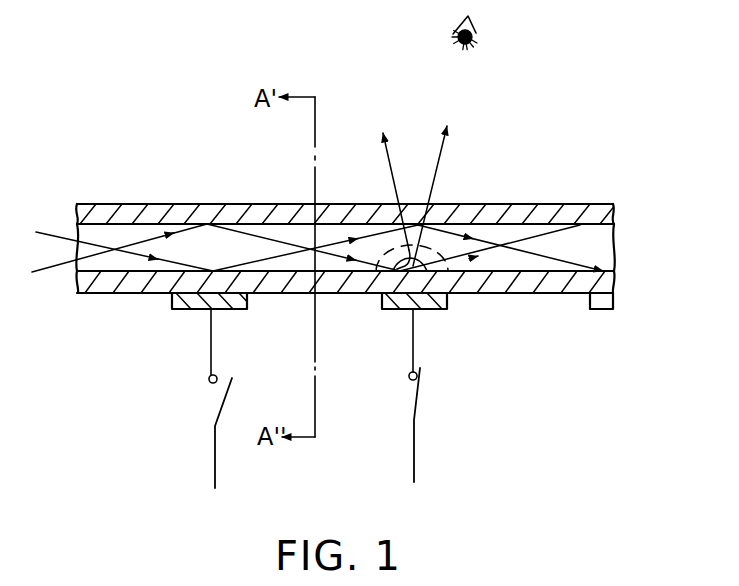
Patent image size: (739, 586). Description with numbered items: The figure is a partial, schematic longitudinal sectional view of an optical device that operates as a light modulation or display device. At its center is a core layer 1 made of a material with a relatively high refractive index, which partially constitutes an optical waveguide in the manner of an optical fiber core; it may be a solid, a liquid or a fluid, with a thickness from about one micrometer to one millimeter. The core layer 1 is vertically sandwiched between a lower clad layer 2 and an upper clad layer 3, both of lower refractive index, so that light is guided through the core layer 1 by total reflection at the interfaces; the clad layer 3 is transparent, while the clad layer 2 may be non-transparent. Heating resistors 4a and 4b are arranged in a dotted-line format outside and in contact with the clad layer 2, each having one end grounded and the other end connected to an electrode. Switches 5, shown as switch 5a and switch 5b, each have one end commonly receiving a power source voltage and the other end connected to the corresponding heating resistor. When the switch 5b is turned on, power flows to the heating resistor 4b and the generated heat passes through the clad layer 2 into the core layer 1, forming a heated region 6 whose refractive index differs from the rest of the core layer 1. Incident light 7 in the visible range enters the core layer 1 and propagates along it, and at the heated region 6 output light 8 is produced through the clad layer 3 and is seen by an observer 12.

The core layer 1 is at (600, 247).
The clad layer 2 is at (603, 283).
The clad layer 3 is at (610, 213).
The heating resistor 4a is at (229, 309).
The heating resistor 4b is at (427, 309).
The switch 5 is at (207, 399).
The switch 5a is at (225, 405).
The switch 5b is at (423, 397).
The heated region 6 is at (438, 256).
The incident light 7 is at (40, 262).
The output light 8 is at (453, 151).
The observer 12 is at (480, 28).